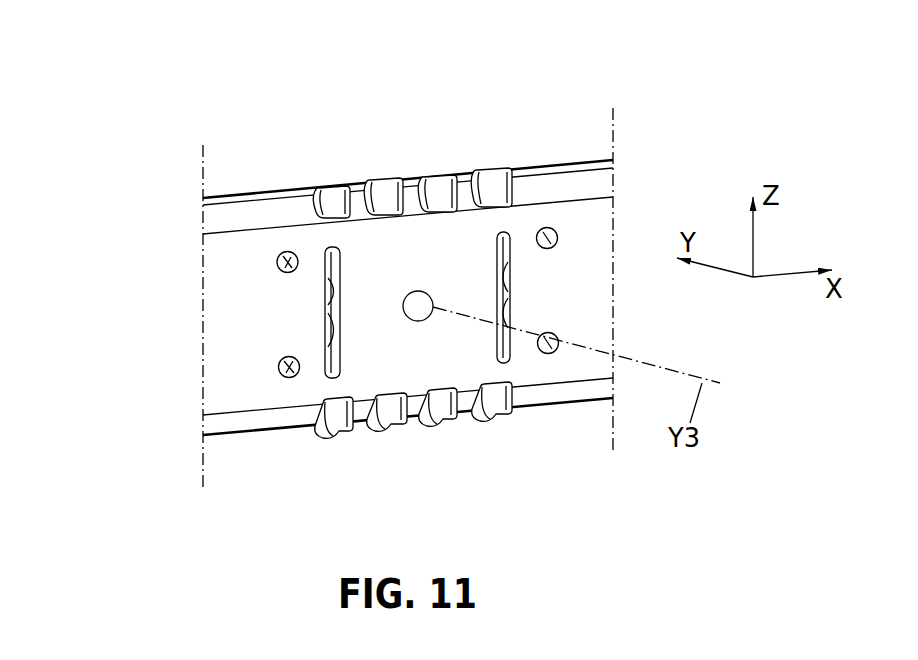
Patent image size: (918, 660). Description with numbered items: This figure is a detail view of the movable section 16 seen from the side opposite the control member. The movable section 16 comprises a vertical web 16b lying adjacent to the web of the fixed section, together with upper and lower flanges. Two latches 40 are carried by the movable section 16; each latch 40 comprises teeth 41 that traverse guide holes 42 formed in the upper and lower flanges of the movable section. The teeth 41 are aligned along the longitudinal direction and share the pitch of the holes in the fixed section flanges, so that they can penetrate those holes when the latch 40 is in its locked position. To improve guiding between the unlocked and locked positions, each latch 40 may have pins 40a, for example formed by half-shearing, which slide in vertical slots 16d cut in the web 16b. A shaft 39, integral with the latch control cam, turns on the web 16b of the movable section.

The movable section 16 is at (233, 380).
The vertical web 16b is at (228, 330).
The vertical slots 16d is at (327, 262).
The shaft 39 is at (420, 305).
The latch 40 is at (422, 120).
The pins 40a is at (327, 328).
The teeth 41 is at (493, 405).
The guide holes 42 is at (508, 395).